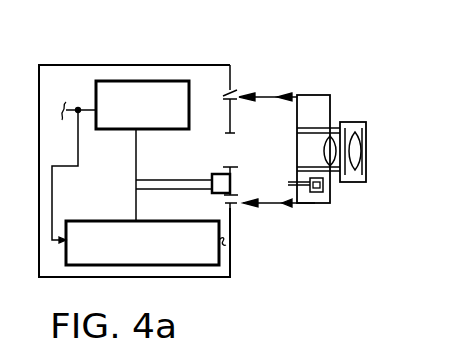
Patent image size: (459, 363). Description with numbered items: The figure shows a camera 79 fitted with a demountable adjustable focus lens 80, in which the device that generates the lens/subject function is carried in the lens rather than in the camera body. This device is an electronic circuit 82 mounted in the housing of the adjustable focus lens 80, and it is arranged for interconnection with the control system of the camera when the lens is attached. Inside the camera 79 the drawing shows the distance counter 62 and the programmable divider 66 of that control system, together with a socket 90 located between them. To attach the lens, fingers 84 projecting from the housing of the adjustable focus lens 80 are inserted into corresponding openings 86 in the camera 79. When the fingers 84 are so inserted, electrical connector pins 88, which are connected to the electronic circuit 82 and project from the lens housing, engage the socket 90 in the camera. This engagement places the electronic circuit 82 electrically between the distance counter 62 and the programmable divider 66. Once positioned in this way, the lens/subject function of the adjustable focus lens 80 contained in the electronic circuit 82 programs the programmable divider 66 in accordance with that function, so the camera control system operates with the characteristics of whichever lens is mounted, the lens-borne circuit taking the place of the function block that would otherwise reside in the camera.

The camera 79 is at (135, 65).
The distance counter 62 is at (170, 81).
The programmable divider 66 is at (90, 221).
The socket 90 is at (212, 174).
The openings 86 is at (239, 91).
The fingers 84 is at (287, 95).
The demountable adjustable focus lens 80 is at (317, 103).
The electrical connector pins 88 is at (294, 182).
The electronic circuit (lens/subject function device) 82 is at (323, 185).